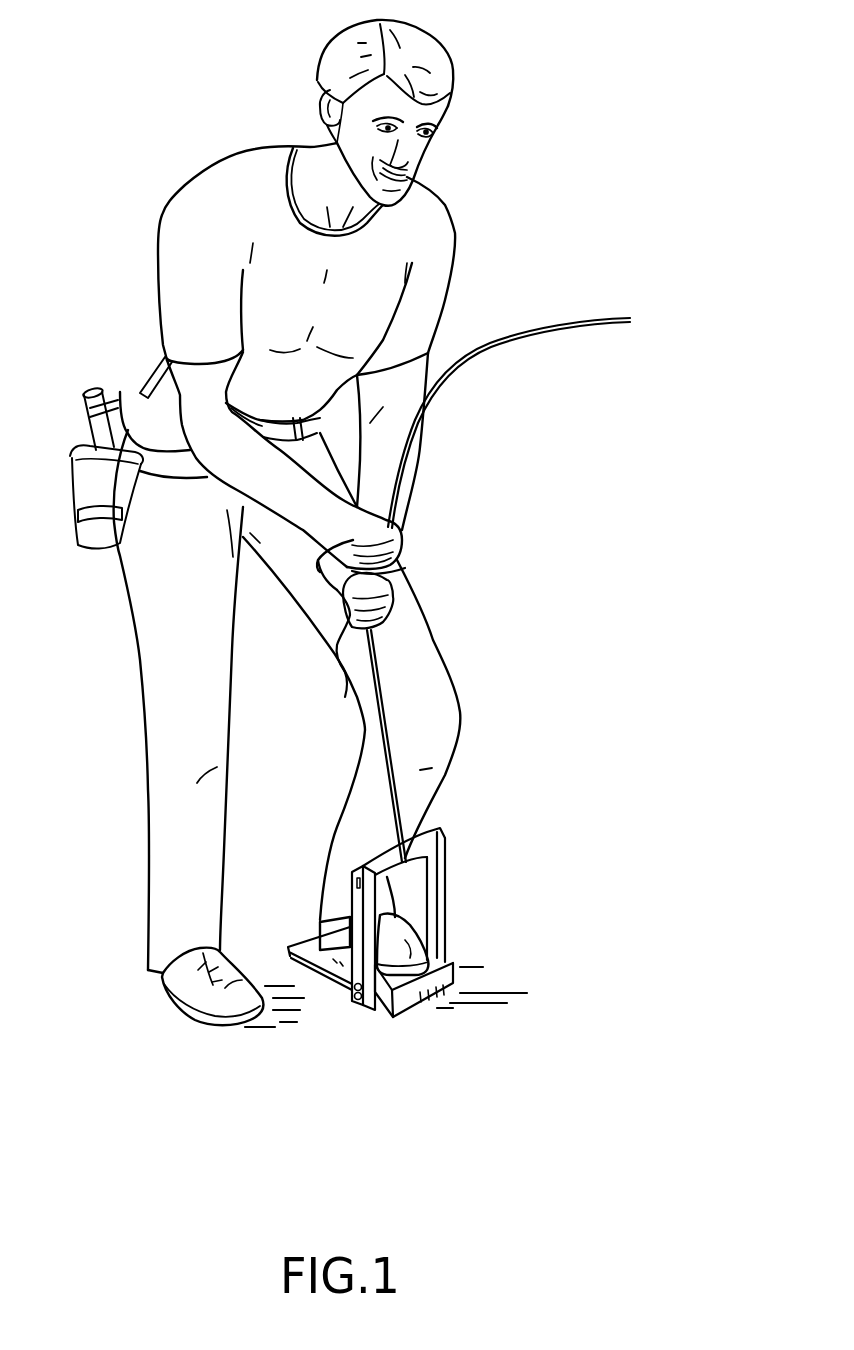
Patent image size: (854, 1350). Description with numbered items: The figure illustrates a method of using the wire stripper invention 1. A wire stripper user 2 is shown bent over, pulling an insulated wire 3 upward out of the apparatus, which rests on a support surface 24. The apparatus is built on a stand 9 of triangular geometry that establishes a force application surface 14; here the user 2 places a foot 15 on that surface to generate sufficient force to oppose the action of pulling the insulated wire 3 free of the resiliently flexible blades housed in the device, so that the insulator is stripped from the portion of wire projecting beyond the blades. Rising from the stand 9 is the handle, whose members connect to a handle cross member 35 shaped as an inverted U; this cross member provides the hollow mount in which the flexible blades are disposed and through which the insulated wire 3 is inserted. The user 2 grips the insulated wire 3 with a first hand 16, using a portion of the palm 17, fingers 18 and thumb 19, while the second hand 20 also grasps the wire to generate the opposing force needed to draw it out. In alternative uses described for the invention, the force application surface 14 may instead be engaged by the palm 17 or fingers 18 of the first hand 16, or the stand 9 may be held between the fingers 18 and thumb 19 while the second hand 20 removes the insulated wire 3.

The wire stripper invention 1 is at (577, 697).
The wire stripper user 2 is at (296, 522).
The insulated wire 3 is at (607, 317).
The stand 9 is at (455, 975).
The force application surface 14 is at (390, 985).
The foot 15 is at (418, 947).
The first hand 16 is at (397, 583).
The palm 17 is at (340, 597).
The fingers 18 is at (353, 663).
The thumb 19 is at (337, 637).
The second hand 20 is at (353, 541).
The support surface 24 is at (507, 1048).
The handle cross member 35 is at (440, 834).